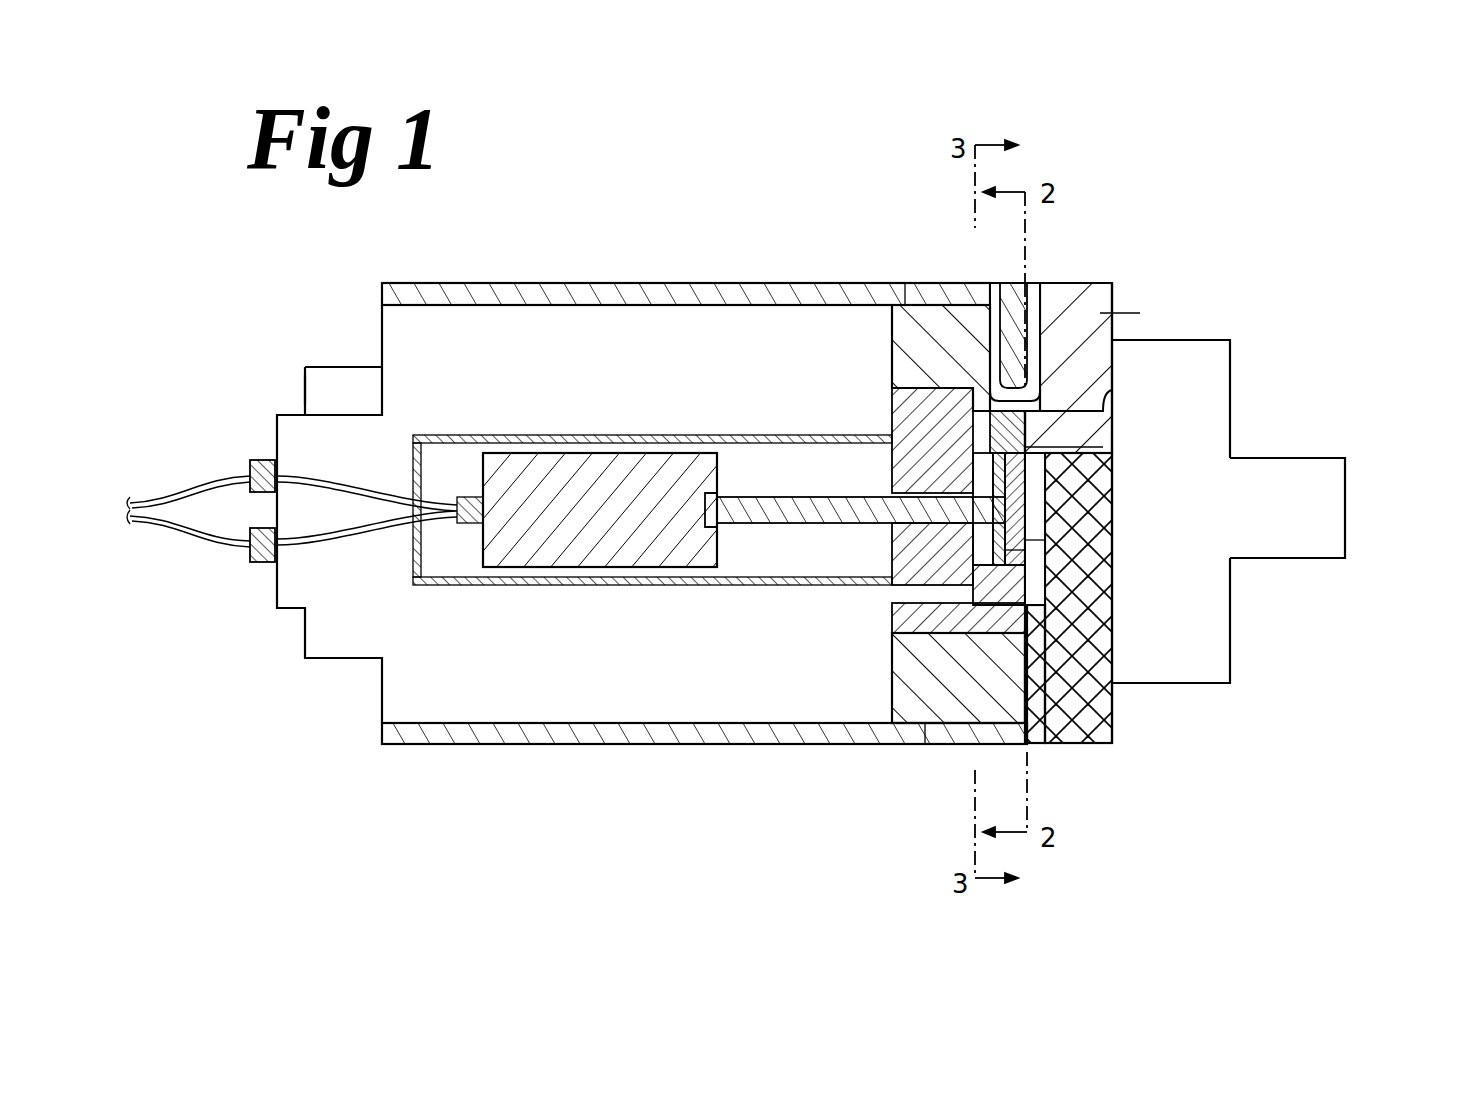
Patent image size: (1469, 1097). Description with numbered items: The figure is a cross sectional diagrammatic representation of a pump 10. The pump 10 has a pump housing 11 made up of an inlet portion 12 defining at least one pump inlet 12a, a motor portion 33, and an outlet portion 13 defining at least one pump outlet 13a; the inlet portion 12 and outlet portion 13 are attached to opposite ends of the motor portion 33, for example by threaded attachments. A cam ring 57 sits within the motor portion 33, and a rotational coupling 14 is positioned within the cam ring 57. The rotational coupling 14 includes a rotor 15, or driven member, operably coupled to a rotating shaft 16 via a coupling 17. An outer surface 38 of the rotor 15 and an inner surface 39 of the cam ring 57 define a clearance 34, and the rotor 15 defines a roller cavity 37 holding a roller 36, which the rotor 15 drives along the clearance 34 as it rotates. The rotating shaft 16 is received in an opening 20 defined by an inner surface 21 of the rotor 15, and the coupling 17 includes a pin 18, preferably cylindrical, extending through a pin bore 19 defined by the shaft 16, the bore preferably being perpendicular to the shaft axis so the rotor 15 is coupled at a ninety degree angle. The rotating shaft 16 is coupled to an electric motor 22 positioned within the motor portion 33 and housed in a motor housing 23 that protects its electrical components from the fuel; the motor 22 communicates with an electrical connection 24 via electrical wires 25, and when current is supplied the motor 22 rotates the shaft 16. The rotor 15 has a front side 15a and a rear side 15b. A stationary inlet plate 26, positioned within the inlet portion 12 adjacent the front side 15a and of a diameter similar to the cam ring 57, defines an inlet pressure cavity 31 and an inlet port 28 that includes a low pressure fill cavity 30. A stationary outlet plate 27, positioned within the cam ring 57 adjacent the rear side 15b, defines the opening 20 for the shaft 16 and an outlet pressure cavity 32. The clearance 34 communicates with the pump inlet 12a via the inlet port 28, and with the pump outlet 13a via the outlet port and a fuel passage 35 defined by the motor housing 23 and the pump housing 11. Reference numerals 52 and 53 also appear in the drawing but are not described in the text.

The pump 10 is at (1178, 185).
The pump housing 11 is at (420, 283).
The inlet portion 12 is at (1232, 683).
The pump inlet 12a is at (1345, 548).
The outlet portion 13 is at (318, 367).
The pump outlet 13a is at (298, 388).
The rotational coupling 14 is at (1112, 690).
The rotor 15 is at (1030, 452).
The front side 15a is at (1045, 475).
The rear side 15b is at (893, 548).
The rotating shaft 16 is at (760, 530).
The coupling 17 is at (988, 425).
The pin 18 is at (1040, 548).
The pin bore 19 is at (978, 470).
The opening 20 is at (1045, 585).
The inner surface 21 is at (1045, 500).
The electric motor 22 is at (622, 528).
The motor housing 23 is at (600, 435).
The electrical connection 24 is at (258, 565).
The electrical wires 25 is at (360, 540).
The inlet plate 26 is at (1112, 313).
The outlet plate 27 is at (888, 406).
The inlet port 28 is at (1150, 340).
The low pressure fill cavity 30 is at (1040, 398).
The inlet pressure cavity 31 is at (1045, 612).
The outlet pressure cavity 32 is at (978, 590).
The motor portion 33 is at (515, 283).
The clearance 34 is at (1003, 330).
The fuel passage 35 is at (523, 715).
The roller 36 is at (1070, 743).
The roller cavity 37 is at (1112, 737).
The outer surface 38 is at (992, 380).
The inner surface 39 is at (1040, 390).
The plug body 52 is at (892, 345).
The plug lower body 53 is at (893, 675).
The cam ring 57 is at (905, 283).